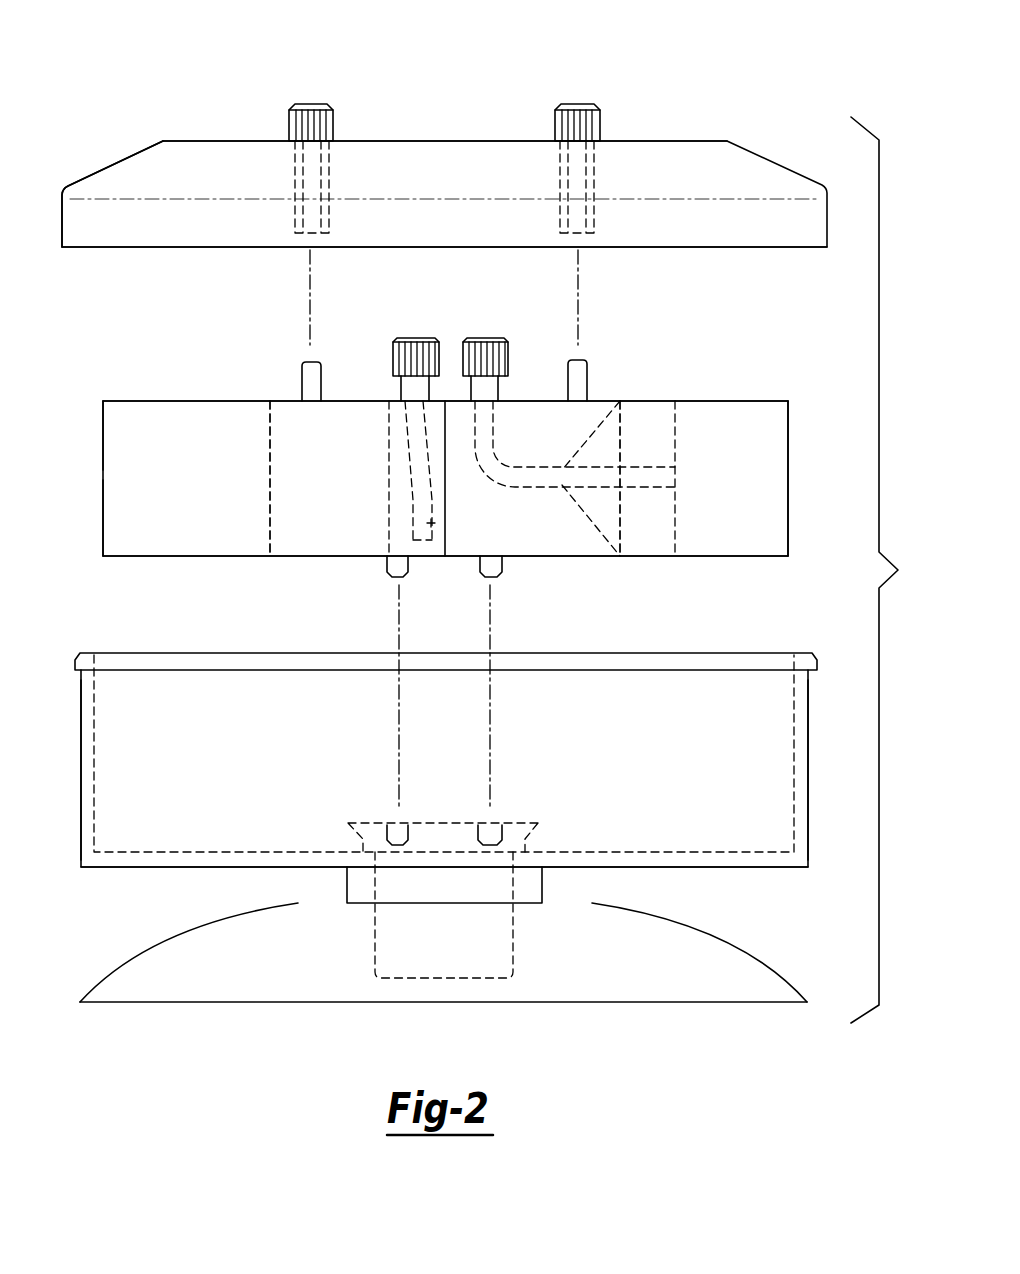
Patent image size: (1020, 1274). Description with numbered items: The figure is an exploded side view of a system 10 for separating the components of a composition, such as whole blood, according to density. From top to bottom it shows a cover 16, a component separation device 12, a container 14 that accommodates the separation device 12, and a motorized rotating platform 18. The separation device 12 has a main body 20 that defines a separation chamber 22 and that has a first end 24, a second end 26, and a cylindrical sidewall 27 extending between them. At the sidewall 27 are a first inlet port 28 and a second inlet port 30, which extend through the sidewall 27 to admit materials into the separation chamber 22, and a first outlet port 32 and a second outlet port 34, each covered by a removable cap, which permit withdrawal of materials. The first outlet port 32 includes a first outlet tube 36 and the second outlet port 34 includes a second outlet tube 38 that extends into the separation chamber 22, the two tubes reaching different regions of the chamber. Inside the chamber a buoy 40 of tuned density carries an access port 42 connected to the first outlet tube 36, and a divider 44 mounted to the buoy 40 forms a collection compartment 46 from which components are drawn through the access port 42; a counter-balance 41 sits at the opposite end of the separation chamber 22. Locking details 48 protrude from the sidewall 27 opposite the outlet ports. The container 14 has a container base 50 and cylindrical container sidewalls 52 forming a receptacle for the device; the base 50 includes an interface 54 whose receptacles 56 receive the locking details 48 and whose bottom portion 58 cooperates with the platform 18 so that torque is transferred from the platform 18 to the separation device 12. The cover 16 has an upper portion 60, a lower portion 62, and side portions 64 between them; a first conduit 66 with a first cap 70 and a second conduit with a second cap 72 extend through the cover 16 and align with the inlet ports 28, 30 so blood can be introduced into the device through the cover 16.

The system 10 is at (890, 570).
The component separation device 12 is at (92, 404).
The container 14 is at (77, 750).
The cover 16 is at (764, 162).
The motorized rotating platform 18 is at (167, 988).
The main body 20 is at (103, 518).
The separation chamber 22 is at (588, 556).
The first end 24 is at (103, 445).
The second end 26 is at (788, 503).
The cylindrical sidewall 27 is at (160, 556).
The first inlet port 28 is at (588, 382).
The second inlet port 30 is at (302, 378).
The first outlet port 32 is at (483, 338).
The second outlet port 34 is at (413, 338).
The first outlet tube 36 is at (507, 487).
The second outlet tube 38 is at (433, 524).
The buoy 40 is at (613, 527).
The counter-balance 41 is at (302, 540).
The access port 42 is at (608, 467).
The divider 44 is at (675, 520).
The collection compartment 46 is at (663, 404).
The locking details 48 is at (483, 566).
The container base 50 is at (778, 870).
The cylindrical container sidewalls 52 is at (81, 815).
The interface 54 is at (543, 900).
The receptacles 56 is at (375, 830).
The bottom portion 58 is at (452, 985).
The upper portion 60 is at (688, 141).
The lower portion 62 is at (165, 250).
The side portions 64 is at (62, 226).
The first conduit 66 is at (594, 190).
The first cap 70 is at (578, 104).
The second cap 72 is at (310, 104).